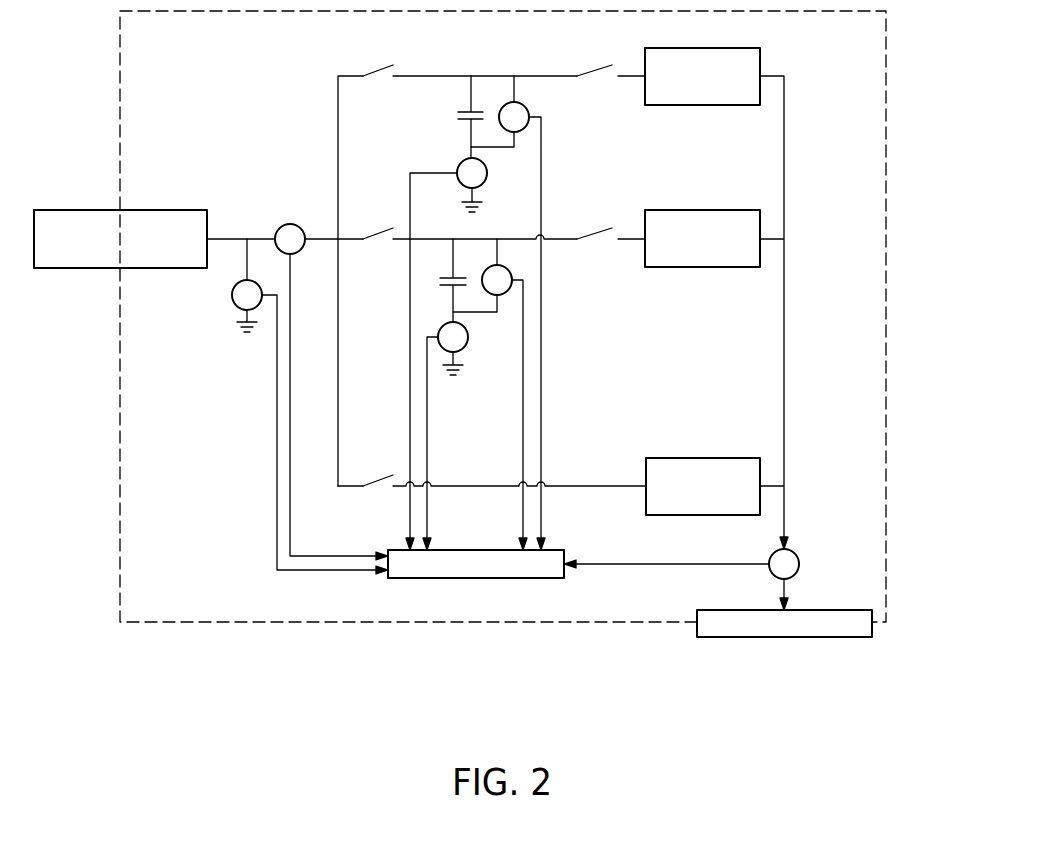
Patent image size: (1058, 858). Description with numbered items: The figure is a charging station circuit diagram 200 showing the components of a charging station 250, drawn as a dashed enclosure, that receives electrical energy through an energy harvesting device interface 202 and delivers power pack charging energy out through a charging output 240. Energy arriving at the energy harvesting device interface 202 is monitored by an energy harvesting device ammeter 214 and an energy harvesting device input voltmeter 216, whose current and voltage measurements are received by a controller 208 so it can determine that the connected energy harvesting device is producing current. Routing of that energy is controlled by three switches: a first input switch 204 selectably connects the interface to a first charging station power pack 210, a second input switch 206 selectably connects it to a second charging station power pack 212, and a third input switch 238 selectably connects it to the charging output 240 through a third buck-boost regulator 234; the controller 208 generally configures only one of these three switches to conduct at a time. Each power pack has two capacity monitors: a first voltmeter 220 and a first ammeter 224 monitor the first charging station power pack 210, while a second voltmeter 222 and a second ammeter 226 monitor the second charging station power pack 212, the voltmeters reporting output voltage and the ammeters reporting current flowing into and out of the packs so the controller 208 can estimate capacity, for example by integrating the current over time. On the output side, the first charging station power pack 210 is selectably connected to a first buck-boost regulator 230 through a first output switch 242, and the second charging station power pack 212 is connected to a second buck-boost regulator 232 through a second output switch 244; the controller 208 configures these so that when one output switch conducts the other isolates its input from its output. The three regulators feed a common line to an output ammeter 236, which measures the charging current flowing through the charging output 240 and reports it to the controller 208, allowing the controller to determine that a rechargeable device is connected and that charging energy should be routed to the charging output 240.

The charging station circuit diagram 200 is at (550, 709).
The energy harvesting device interface 202 is at (78, 210).
The first input switch 204 is at (386, 64).
The second input switch 206 is at (392, 227).
The controller 208 is at (483, 548).
The first charging station power pack 210 is at (465, 110).
The second charging station power pack 212 is at (448, 288).
The energy harvesting device ammeter 214 is at (290, 224).
The energy harvesting device input voltmeter 216 is at (232, 295).
The first voltmeter 220 is at (527, 112).
The second voltmeter 222 is at (510, 275).
The first ammeter 224 is at (462, 163).
The second ammeter 226 is at (468, 335).
The first buck-boost regulator 230 is at (702, 105).
The second buck-boost regulator 232 is at (702, 268).
The third buck-boost regulator 234 is at (712, 458).
The output ammeter 236 is at (800, 560).
The third input switch 238 is at (392, 474).
The charging output 240 is at (784, 637).
The first output switch 242 is at (606, 64).
The second output switch 244 is at (612, 227).
The charging station 250 is at (120, 382).